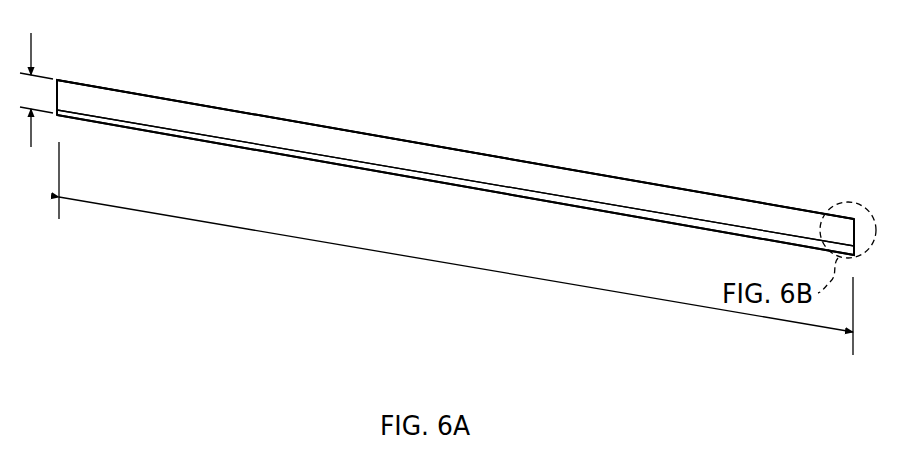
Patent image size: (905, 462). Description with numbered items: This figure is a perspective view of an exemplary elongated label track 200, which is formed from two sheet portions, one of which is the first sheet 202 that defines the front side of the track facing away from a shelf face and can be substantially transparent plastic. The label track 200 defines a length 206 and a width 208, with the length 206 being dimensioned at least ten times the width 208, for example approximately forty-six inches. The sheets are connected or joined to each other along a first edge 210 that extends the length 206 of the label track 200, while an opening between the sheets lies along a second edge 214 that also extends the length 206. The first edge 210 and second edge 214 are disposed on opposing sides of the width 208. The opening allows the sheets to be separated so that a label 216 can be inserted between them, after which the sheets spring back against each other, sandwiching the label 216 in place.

The elongated label track 200 is at (400, 82).
The first sheet 202 is at (508, 188).
The length 206 is at (410, 255).
The width 208 is at (31, 53).
The first edge 210 is at (737, 237).
The second edge 214 is at (717, 193).
The label 216 is at (507, 170).